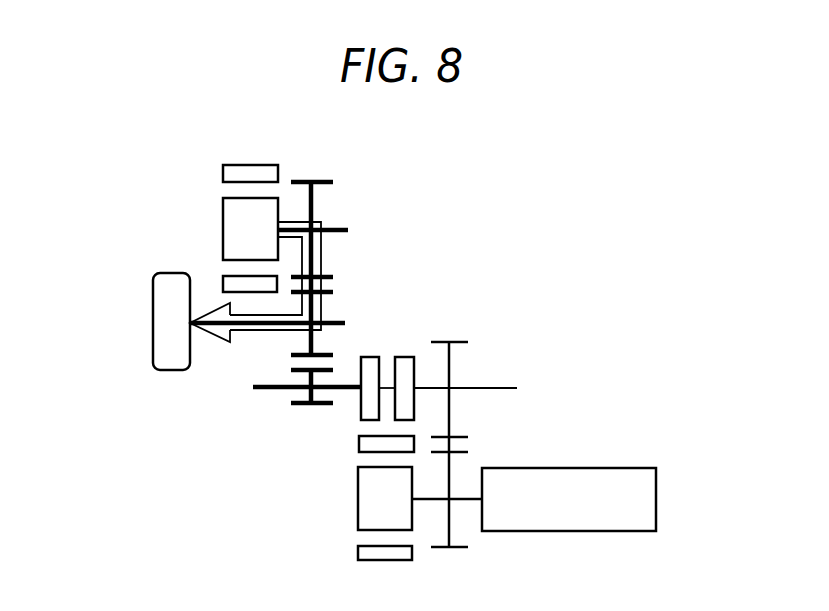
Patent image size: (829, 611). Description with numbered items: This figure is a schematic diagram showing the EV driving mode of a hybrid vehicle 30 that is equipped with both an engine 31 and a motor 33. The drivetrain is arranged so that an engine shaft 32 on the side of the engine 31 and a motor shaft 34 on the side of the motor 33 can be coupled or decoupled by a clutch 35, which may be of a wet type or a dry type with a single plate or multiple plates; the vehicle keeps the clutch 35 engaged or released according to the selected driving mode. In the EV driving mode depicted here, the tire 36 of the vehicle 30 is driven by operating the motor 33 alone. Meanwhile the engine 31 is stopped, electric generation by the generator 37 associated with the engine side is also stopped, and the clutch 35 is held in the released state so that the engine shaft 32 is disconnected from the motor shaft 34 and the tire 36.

The vehicle 30 is at (556, 238).
The engine 31 is at (656, 500).
The engine shaft 32 is at (492, 388).
The motor 33 is at (222, 232).
The motor shaft 34 is at (275, 390).
The clutch 35 is at (333, 418).
The tire 36 is at (153, 325).
The generator 37 is at (358, 499).